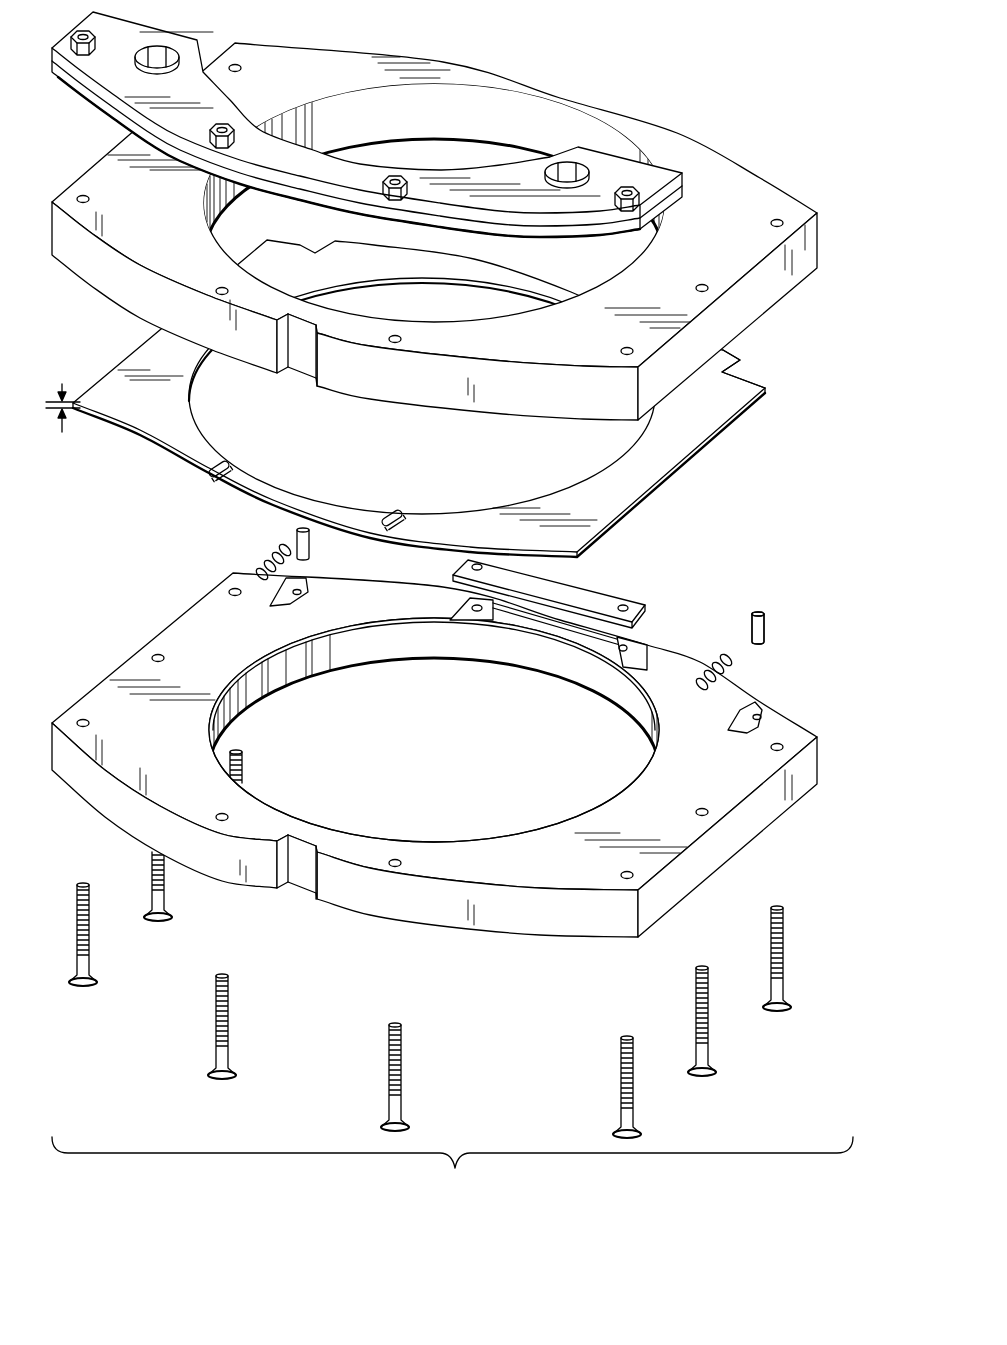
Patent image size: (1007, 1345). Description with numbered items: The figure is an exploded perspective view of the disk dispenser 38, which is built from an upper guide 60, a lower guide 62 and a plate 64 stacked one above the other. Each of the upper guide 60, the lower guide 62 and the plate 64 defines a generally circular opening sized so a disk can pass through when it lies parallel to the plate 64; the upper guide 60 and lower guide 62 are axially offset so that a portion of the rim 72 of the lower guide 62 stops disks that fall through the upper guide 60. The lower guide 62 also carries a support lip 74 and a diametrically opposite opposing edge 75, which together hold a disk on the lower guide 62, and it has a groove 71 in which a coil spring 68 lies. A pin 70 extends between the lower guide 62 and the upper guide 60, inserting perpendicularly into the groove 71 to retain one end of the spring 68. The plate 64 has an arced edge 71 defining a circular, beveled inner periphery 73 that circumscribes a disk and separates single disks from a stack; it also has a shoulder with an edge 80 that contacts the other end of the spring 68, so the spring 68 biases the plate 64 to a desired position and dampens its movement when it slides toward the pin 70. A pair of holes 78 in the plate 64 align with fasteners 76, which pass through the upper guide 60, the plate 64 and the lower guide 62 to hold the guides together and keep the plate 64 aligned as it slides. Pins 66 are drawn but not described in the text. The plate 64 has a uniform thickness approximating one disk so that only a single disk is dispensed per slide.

The disk dispenser 38 is at (726, 82).
The upper guide 60 is at (807, 247).
The lower guide 62 is at (800, 773).
The plate 64 is at (745, 404).
The locating pin 66 is at (283, 548).
The spring 68 is at (733, 665).
The pin 70 is at (748, 628).
The arced edge 71 is at (195, 410).
The rim 72 is at (389, 630).
The inner periphery 73 is at (504, 500).
The support lip 74 is at (590, 594).
The opposing edge 75 is at (320, 823).
The fasteners 76 is at (230, 1060).
The holes 78 is at (229, 462).
The edge 80 is at (751, 378).